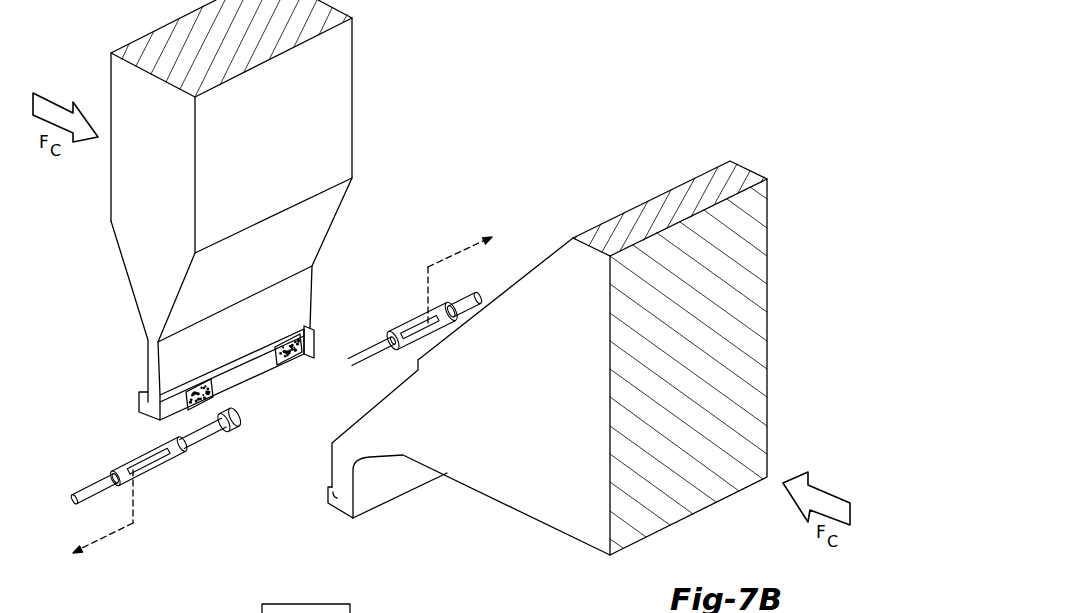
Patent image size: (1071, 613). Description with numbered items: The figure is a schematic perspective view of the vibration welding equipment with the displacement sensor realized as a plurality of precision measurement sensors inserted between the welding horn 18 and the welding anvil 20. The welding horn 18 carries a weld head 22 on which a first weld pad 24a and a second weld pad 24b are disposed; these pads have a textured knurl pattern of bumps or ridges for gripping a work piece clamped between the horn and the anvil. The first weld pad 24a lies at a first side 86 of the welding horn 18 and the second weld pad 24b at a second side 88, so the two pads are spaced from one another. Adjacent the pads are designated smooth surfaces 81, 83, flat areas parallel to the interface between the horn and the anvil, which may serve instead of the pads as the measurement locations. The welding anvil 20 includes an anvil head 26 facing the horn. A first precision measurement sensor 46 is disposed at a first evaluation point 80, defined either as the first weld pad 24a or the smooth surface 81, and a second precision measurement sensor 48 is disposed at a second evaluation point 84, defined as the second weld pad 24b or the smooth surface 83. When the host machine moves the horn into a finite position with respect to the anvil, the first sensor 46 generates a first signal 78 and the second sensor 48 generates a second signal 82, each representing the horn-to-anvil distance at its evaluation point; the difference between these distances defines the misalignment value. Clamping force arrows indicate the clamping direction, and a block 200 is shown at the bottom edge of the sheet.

The welding horn 18 is at (163, 187).
The welding anvil 20 is at (546, 395).
The weld head 22 is at (246, 368).
The first weld pad 24a is at (205, 400).
The second weld pad 24b is at (316, 348).
The anvil head 26 is at (330, 497).
The first precision measurement sensor 46 is at (170, 452).
The second precision measurement sensor 48 is at (412, 326).
The first signal 78 is at (108, 538).
The first evaluation point 80 is at (176, 415).
The smooth surface 81 is at (184, 374).
The second signal 82 is at (457, 253).
The smooth surface 83 is at (280, 330).
The second evaluation point 84 is at (307, 324).
The first side 86 is at (139, 405).
The second side 88 is at (318, 340).
The controller 200 is at (425, 612).